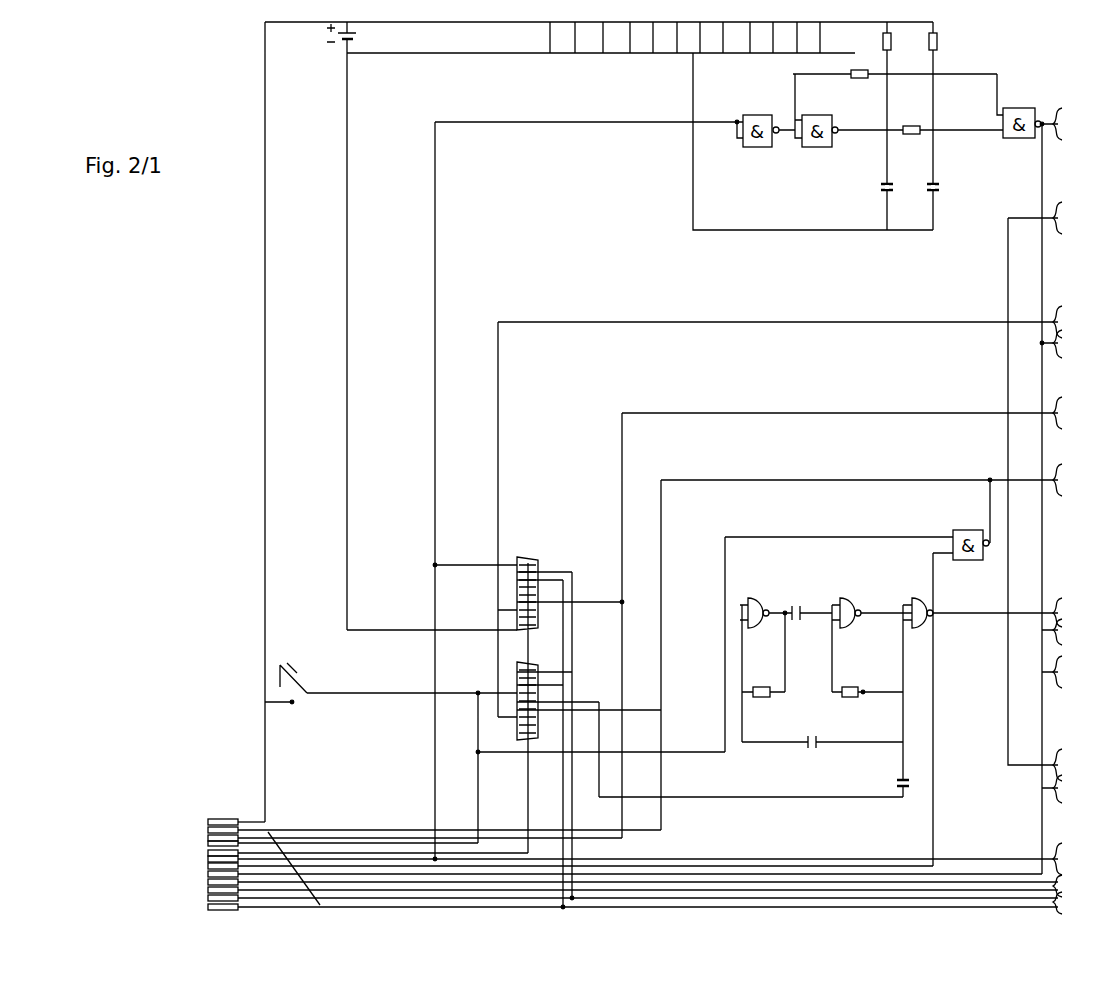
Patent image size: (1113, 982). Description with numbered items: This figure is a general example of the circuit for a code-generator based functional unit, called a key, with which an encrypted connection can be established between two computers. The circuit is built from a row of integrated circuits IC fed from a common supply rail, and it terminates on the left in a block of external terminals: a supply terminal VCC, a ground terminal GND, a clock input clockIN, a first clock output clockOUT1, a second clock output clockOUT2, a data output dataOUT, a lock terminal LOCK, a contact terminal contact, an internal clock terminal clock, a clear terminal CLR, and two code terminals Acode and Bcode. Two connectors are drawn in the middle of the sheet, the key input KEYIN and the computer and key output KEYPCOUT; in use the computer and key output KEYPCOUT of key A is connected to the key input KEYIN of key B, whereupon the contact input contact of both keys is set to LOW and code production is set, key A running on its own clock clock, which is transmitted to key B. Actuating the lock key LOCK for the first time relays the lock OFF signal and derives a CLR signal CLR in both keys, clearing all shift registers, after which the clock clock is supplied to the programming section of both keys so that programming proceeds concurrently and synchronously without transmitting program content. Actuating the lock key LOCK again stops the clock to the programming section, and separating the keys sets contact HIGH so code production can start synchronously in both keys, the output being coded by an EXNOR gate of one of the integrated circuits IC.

The integrated circuit IC is at (680, 37).
The key input KEYIN is at (532, 705).
The computer and key output KEYPCOUT is at (548, 719).
The supply voltage terminal VCC is at (208, 822).
The clock OUT terminal clockOUT1 is at (208, 830).
The clock IN terminal clockIN is at (208, 838).
The lock key LOCK is at (208, 843).
The ground terminal GND is at (208, 853).
The contact input contact is at (208, 859).
The element clock is at (208, 866).
The CLR signal CLR is at (208, 874).
The B code terminal Bcode is at (208, 882).
The A code terminal Acode is at (208, 890).
The clock OUT terminal clockOUT2 is at (208, 898).
The data OUT terminal dataOUT is at (208, 907).